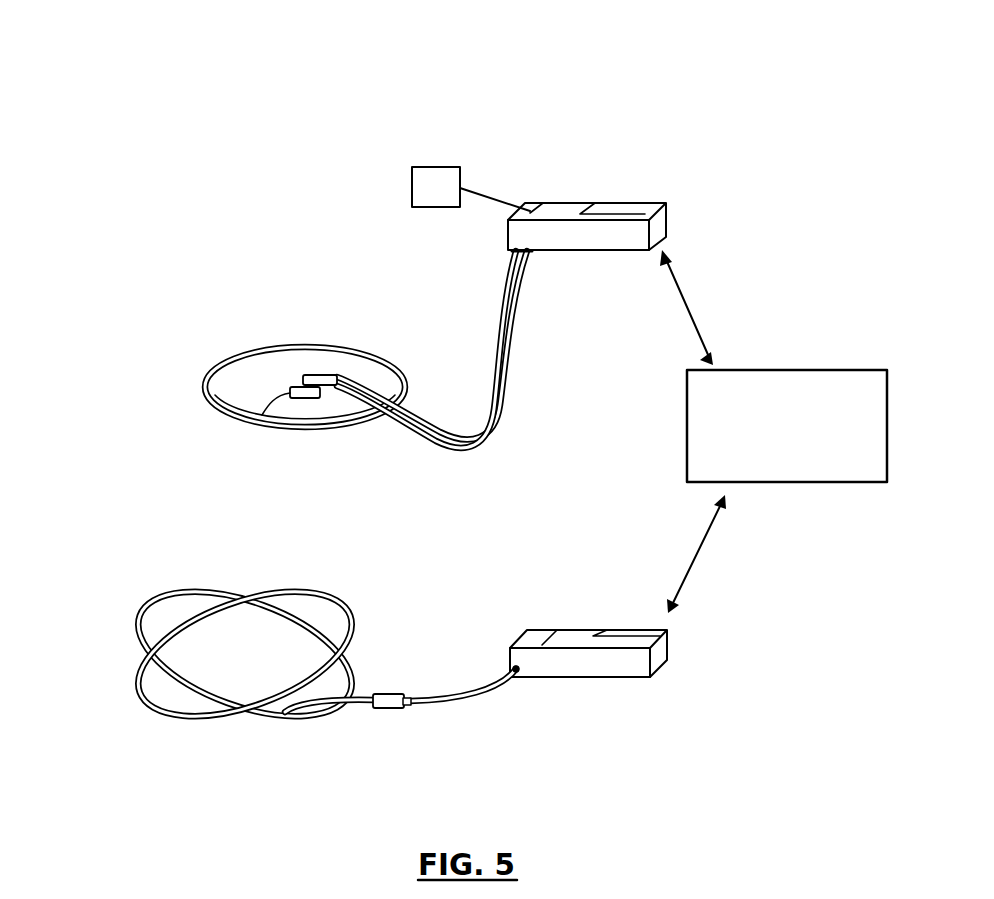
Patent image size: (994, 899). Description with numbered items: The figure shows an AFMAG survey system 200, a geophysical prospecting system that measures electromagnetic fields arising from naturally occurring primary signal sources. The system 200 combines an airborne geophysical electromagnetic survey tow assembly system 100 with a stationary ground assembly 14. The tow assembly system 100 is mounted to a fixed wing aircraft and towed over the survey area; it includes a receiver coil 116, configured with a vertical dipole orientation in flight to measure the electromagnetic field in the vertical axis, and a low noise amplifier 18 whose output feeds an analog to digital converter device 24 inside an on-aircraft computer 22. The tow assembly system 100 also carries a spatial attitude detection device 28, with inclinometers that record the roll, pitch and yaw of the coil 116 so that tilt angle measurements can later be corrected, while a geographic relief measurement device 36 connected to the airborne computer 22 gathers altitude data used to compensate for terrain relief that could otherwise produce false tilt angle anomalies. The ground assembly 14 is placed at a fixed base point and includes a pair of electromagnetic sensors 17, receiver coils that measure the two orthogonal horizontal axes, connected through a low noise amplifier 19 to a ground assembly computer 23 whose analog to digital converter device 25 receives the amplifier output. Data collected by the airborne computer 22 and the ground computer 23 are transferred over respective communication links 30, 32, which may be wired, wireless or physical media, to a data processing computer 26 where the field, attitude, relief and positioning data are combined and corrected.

The geophysical electromagnetic survey tow assembly system 100 is at (136, 264).
The AFMAG survey system 200 is at (756, 164).
The receiver coil 116 is at (277, 347).
The low noise amplifier 18 is at (300, 380).
The spatial attitude detection device 28 is at (338, 378).
The geographic relief measurement device 36 is at (412, 187).
The computer 22 is at (640, 250).
The analog to digital converter device 24 is at (532, 252).
The data processing computer 26 is at (687, 421).
The communication link 30 is at (684, 290).
The communication link 32 is at (697, 557).
The ground assembly computer 23 is at (630, 677).
The analog to digital converter device 25 is at (523, 674).
The ground assembly 14 is at (172, 563).
The electromagnetic sensors 17 is at (357, 667).
The low noise amplifier 19 is at (391, 693).